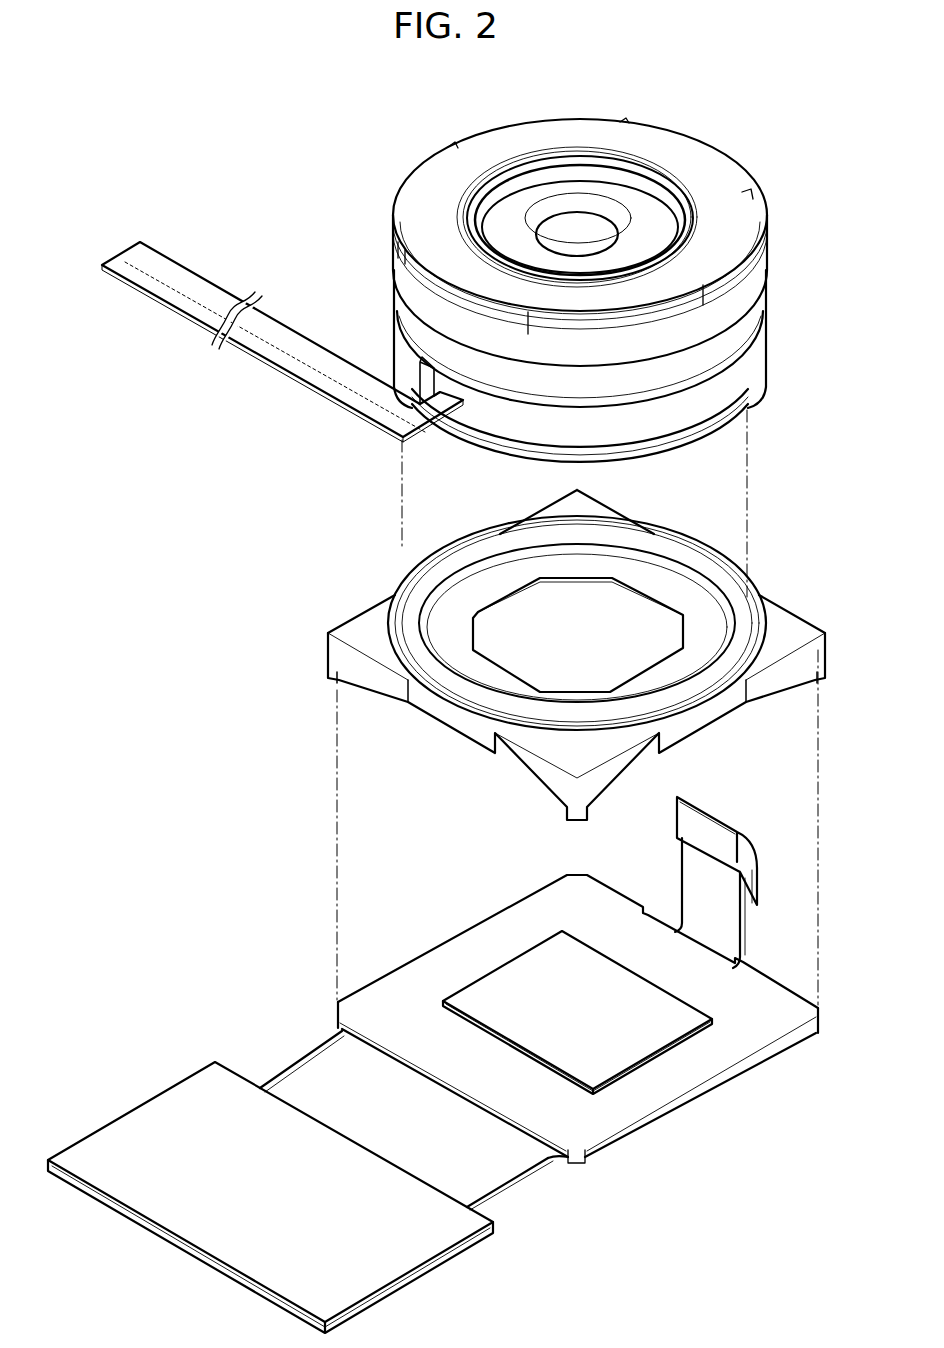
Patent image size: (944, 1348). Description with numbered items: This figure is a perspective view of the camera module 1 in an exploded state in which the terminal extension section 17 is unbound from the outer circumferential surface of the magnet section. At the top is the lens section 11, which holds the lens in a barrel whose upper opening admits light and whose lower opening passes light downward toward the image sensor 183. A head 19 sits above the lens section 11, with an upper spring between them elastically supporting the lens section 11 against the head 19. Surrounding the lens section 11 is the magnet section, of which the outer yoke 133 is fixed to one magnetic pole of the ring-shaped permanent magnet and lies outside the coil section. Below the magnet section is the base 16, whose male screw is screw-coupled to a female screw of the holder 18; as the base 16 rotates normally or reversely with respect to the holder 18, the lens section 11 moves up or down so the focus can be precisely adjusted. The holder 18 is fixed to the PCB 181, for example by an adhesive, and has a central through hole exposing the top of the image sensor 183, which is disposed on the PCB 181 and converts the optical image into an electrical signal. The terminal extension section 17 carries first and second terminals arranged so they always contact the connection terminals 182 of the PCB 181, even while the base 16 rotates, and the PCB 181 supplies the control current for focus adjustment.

The camera module 1 is at (432, 108).
The lens section 11 is at (574, 165).
The head 19 is at (650, 125).
The outer yoke 133 is at (583, 388).
The base 16 is at (695, 412).
The terminal extension section 17 is at (290, 312).
The holder 18 is at (792, 628).
The PCB 181 is at (690, 1065).
The connection terminals 182 is at (712, 822).
The image sensor 183 is at (600, 1056).